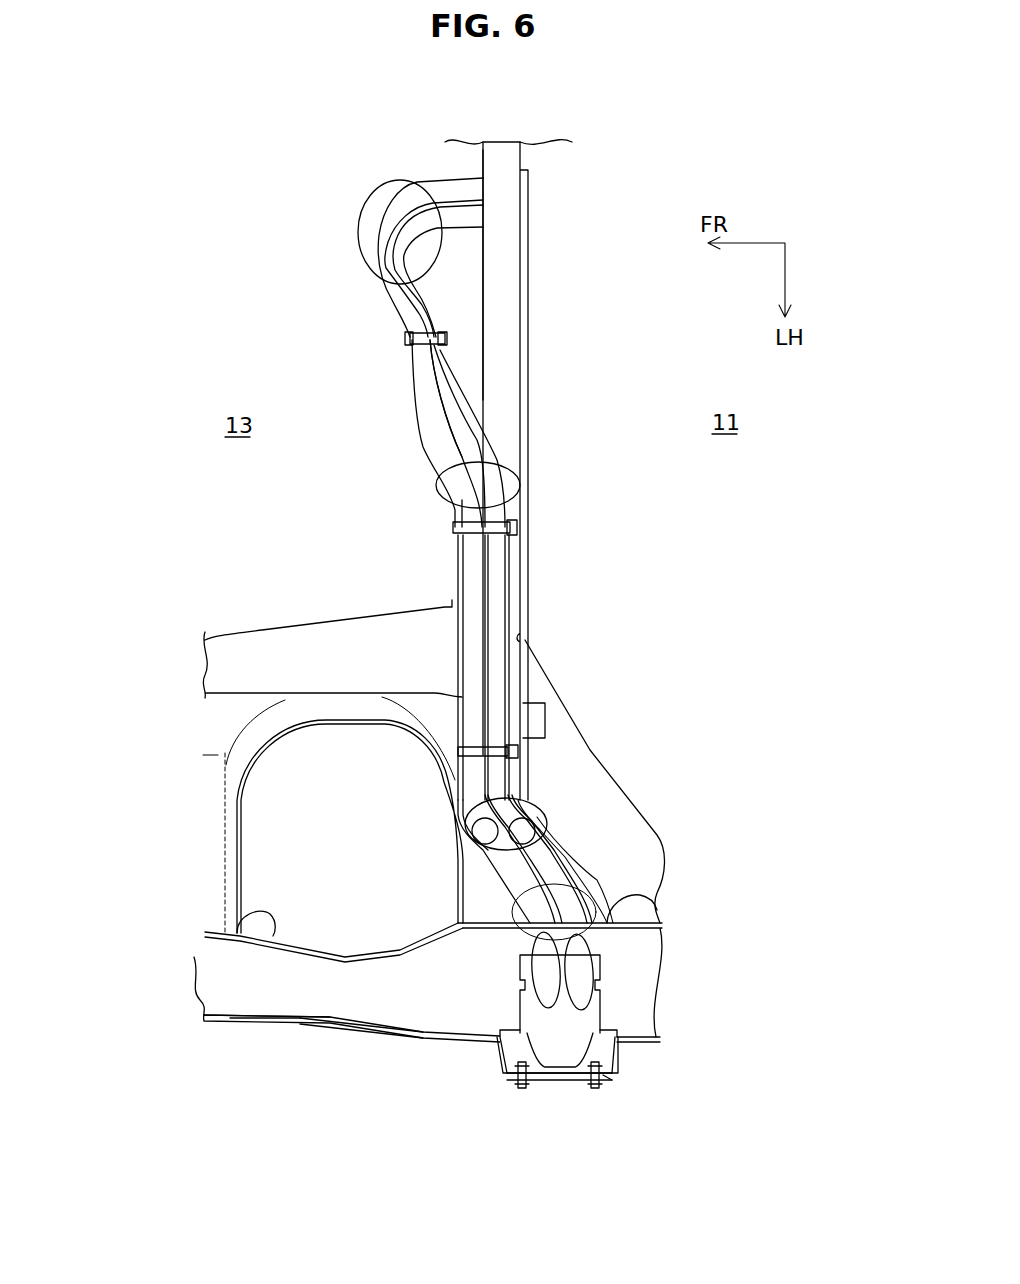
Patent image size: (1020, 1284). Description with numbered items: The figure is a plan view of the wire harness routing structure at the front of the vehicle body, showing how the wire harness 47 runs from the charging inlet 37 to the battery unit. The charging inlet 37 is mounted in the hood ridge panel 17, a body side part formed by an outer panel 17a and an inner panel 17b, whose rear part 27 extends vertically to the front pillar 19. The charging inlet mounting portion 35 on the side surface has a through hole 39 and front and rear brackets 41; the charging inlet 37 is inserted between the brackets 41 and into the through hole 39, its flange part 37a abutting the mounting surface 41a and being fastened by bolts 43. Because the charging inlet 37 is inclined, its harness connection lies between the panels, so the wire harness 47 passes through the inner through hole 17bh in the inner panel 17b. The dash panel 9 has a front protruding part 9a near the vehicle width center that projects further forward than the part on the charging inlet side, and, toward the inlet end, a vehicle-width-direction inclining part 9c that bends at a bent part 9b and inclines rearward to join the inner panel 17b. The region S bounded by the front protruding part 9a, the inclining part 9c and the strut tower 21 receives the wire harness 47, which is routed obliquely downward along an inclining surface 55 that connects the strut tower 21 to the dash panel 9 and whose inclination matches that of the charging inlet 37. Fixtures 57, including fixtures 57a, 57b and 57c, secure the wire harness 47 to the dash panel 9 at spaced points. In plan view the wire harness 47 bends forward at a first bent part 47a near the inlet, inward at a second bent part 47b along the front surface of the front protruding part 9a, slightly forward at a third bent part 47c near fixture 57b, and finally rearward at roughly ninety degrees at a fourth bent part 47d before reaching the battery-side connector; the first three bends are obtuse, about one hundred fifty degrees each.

The dash panel 9 is at (413, 387).
The front protruding part 9a is at (446, 398).
The bent part 9b is at (478, 838).
The vehicle-width-direction inclining part 9c is at (580, 880).
The hood ridge panel 17 is at (268, 1022).
The outer panel 17a is at (223, 1021).
The inner panel 17b is at (245, 916).
The inner through hole 17bh is at (607, 930).
The front pillar 19 is at (361, 1031).
The strut tower 21 is at (229, 791).
The rear part 27 is at (361, 1025).
The charging inlet mounting portion 35 is at (617, 1057).
The charging inlet 37 is at (597, 1000).
The flange part 37a is at (610, 1078).
The through hole 39 is at (603, 1020).
The bracket 41 is at (507, 1063).
The mounting surface 41a is at (605, 1082).
The bolt 43 is at (595, 1088).
The wire harness 47 is at (413, 423).
The first bent part 47a is at (655, 898).
The second bent part 47b is at (527, 797).
The third bent part 47c is at (437, 495).
The fourth bent part 47d is at (360, 233).
The inclining surface 55 is at (483, 930).
The fixture 57 is at (632, 382).
The fixture 57a is at (497, 747).
The fixture 57b is at (520, 527).
The fixture 57c is at (447, 338).